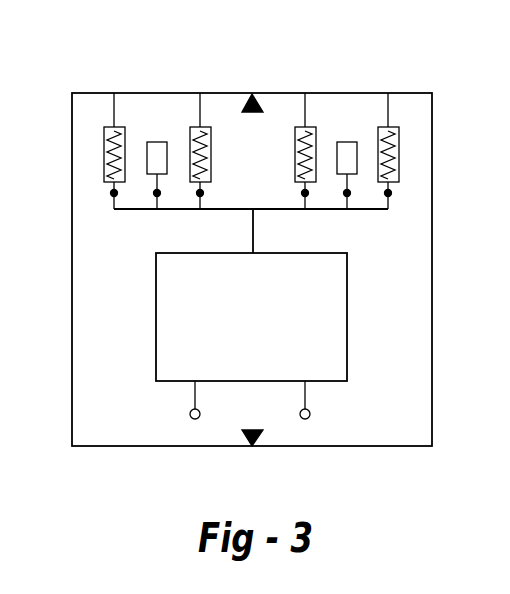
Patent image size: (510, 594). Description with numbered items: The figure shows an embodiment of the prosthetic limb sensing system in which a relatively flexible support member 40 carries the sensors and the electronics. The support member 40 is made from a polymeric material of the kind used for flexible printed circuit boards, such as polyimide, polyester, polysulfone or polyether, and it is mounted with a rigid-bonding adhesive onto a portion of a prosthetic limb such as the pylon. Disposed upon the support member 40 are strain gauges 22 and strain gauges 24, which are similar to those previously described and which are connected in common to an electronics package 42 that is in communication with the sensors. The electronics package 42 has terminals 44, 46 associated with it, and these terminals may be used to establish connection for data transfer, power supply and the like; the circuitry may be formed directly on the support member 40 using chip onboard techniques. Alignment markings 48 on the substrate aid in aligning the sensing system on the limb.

The strain gauge 22 is at (113, 100).
The strain gauge 24 is at (157, 148).
The flexible support member 40 is at (252, 269).
The electronics package 42 is at (251, 317).
The terminal 44 is at (305, 420).
The terminal 46 is at (195, 420).
The alignment markings 48 is at (252, 98).